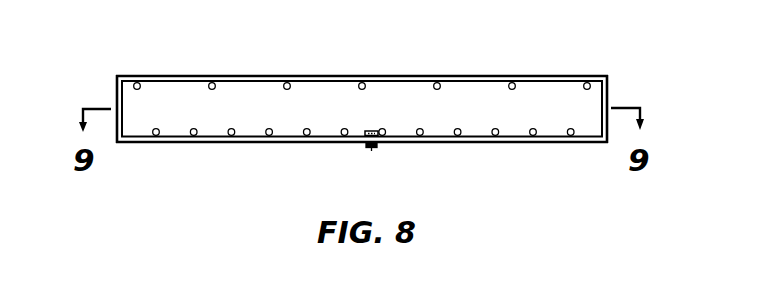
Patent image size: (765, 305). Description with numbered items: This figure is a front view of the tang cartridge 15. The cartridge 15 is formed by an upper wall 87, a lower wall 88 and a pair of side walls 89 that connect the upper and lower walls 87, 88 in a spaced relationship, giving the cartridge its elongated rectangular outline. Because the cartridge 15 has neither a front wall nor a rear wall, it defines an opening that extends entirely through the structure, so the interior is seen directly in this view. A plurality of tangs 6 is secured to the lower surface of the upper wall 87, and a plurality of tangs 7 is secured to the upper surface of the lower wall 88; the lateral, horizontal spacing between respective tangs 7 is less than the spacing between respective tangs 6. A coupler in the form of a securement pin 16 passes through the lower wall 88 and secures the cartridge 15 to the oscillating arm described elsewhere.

The tangs 6 is at (137, 81).
The tangs 7 is at (495, 136).
The cartridge 15 is at (250, 155).
The securement pin 16 is at (370, 153).
The upper wall 87 is at (473, 75).
The lower wall 88 is at (408, 142).
The side walls 89 is at (116, 92).